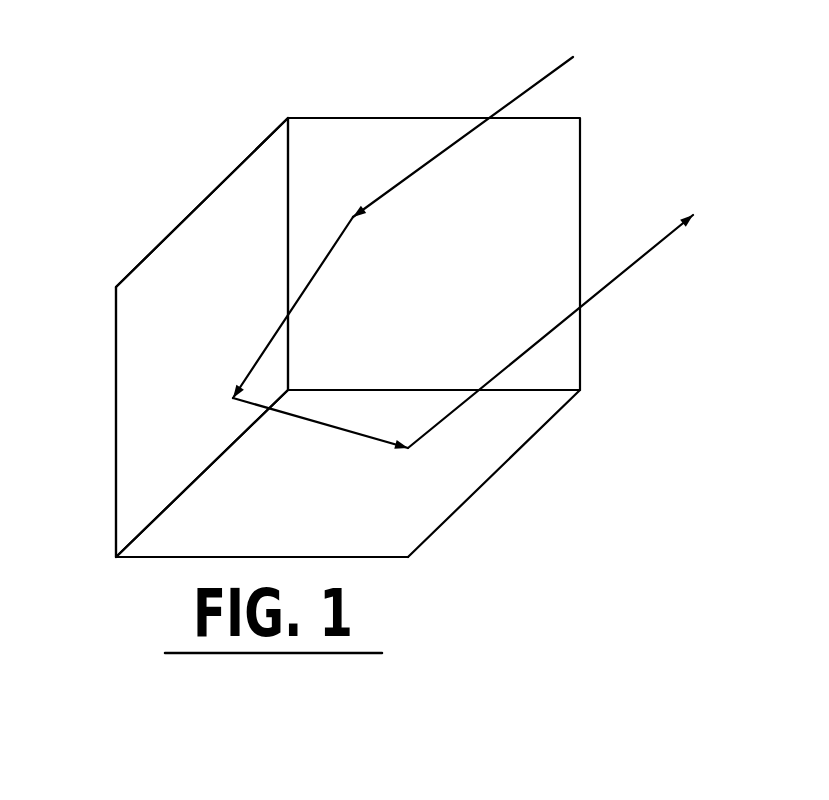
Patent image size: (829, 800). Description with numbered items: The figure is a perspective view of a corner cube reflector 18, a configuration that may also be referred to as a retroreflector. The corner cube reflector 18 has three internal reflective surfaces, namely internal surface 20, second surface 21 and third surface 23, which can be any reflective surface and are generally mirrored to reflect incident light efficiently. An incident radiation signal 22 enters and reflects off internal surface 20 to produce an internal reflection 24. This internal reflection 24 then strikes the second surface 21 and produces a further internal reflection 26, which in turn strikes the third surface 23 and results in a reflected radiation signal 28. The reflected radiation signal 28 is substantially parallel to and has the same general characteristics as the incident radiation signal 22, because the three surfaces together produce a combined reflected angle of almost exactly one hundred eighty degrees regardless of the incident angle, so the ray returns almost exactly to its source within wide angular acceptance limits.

The corner cube reflector 18 is at (115, 440).
The internal reflective surface 20 is at (350, 143).
The second surface 21 is at (178, 283).
The incident radiation signal 22 is at (543, 77).
The third surface 23 is at (468, 450).
The internal reflection 24 is at (327, 253).
The internal reflection 26 is at (355, 438).
The reflected radiation signal 28 is at (648, 257).